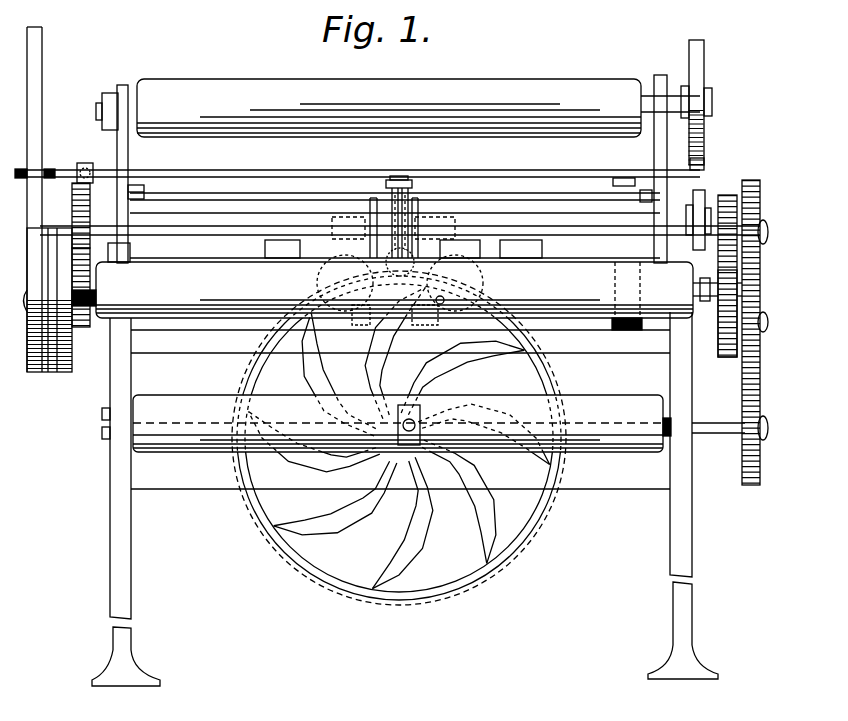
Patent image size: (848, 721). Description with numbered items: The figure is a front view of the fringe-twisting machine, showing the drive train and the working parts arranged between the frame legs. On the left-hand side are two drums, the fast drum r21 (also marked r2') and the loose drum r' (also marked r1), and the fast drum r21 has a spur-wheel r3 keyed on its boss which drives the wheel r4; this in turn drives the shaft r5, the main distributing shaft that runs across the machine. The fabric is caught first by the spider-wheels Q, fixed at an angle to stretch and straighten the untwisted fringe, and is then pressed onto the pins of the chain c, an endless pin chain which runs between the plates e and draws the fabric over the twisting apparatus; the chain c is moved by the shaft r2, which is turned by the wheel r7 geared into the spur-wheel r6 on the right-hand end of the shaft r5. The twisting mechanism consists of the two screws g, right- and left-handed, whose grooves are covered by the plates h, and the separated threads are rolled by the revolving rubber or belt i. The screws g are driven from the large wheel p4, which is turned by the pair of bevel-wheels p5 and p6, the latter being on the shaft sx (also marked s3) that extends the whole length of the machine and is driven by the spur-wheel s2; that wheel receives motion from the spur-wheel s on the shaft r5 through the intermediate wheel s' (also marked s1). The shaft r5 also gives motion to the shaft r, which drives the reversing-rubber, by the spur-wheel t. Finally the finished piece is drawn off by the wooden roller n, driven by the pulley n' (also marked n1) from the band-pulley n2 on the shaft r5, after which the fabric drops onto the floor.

The drawing-off roller n is at (398, 105).
The pulley n' is at (707, 99).
The driving pulley of roller n n1 is at (696, 102).
The band-pulley n2 is at (698, 210).
The loose drum r' is at (23, 199).
The driving belt r1 is at (34, 199).
The wheel r4 is at (359, 203).
The spur-wheel r3 is at (86, 310).
The fast drum r21 is at (70, 357).
The belt pulley r2' is at (49, 300).
The shaft r5 is at (400, 222).
The spur-wheel t is at (622, 178).
The plates h is at (373, 198).
The revolving rubber or belt i is at (392, 180).
The plates or platform e is at (455, 240).
The spider-wheels Q is at (322, 272).
The screws g is at (395, 306).
The chain c is at (437, 299).
The shaft r is at (407, 304).
The shaft r2 is at (656, 296).
The spur-wheel r6 is at (728, 205).
The wheel r7 is at (724, 327).
The spur-wheel s is at (756, 318).
The intermediate wheel s' is at (760, 283).
The gear shaft s1 is at (762, 285).
The spur-wheel s2 is at (748, 470).
The shaft sx is at (685, 436).
The shaft collar s3 is at (660, 445).
The large wheel p4 is at (548, 392).
The bevel-wheel p5 is at (397, 452).
The bevel-wheel p6 is at (380, 452).